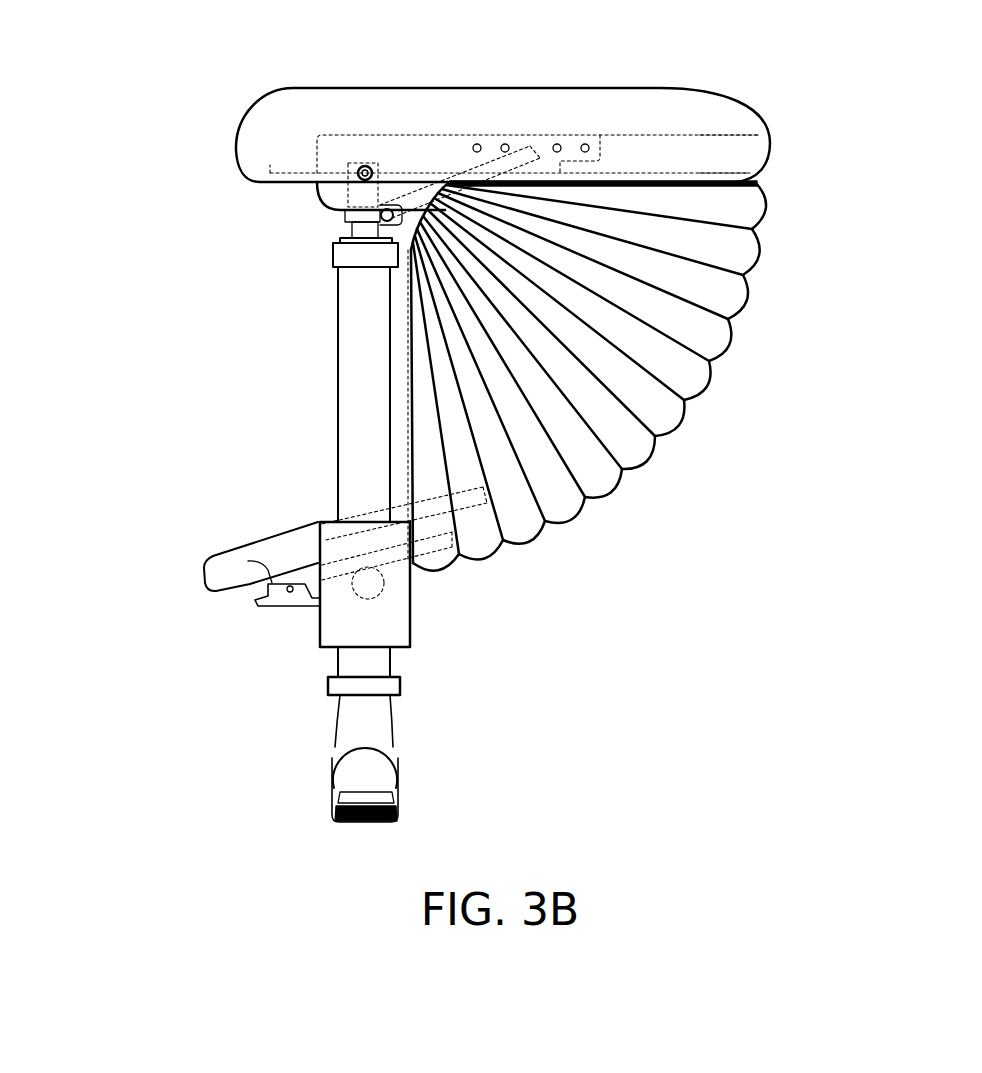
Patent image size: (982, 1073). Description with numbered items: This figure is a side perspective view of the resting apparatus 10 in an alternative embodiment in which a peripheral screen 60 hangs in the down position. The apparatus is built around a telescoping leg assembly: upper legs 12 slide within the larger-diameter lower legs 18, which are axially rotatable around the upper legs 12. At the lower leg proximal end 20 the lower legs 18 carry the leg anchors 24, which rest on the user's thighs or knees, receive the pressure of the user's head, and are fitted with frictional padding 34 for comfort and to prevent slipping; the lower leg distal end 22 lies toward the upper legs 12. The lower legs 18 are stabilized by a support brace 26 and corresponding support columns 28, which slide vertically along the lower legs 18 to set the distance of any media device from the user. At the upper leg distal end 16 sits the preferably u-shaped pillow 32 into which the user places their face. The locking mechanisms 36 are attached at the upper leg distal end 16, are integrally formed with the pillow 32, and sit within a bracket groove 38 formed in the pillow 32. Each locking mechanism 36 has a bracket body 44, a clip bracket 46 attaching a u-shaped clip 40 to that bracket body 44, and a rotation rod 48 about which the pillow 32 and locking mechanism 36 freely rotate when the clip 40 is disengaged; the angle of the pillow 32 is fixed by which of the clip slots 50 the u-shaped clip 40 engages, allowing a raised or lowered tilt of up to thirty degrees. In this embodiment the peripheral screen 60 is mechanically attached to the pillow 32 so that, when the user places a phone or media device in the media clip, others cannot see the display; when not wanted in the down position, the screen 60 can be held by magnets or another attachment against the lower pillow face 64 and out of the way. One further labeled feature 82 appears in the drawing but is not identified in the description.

The resting apparatus 10 is at (178, 372).
The upper legs 12 is at (357, 230).
The upper leg distal end 16 is at (353, 175).
The lower legs 18 is at (338, 351).
The lower leg proximal end 20 is at (330, 685).
The lower leg distal end 22 is at (340, 258).
The leg anchors 24 is at (395, 768).
The support brace 26 is at (370, 583).
The support columns 28 is at (405, 627).
The pillow 32 is at (737, 106).
The frictional padding 34 is at (355, 820).
The locking mechanisms 36 is at (455, 140).
The bracket groove 38 is at (760, 155).
The u-shaped clip 40 is at (427, 195).
The bracket body 44 is at (506, 144).
The clip bracket 46 is at (345, 218).
The rotation rod 48 is at (366, 166).
The clip slots 50 is at (586, 144).
The peripheral screen 60 is at (645, 443).
The lower pillow face 64 is at (757, 184).
The recess 82 is at (355, 165).